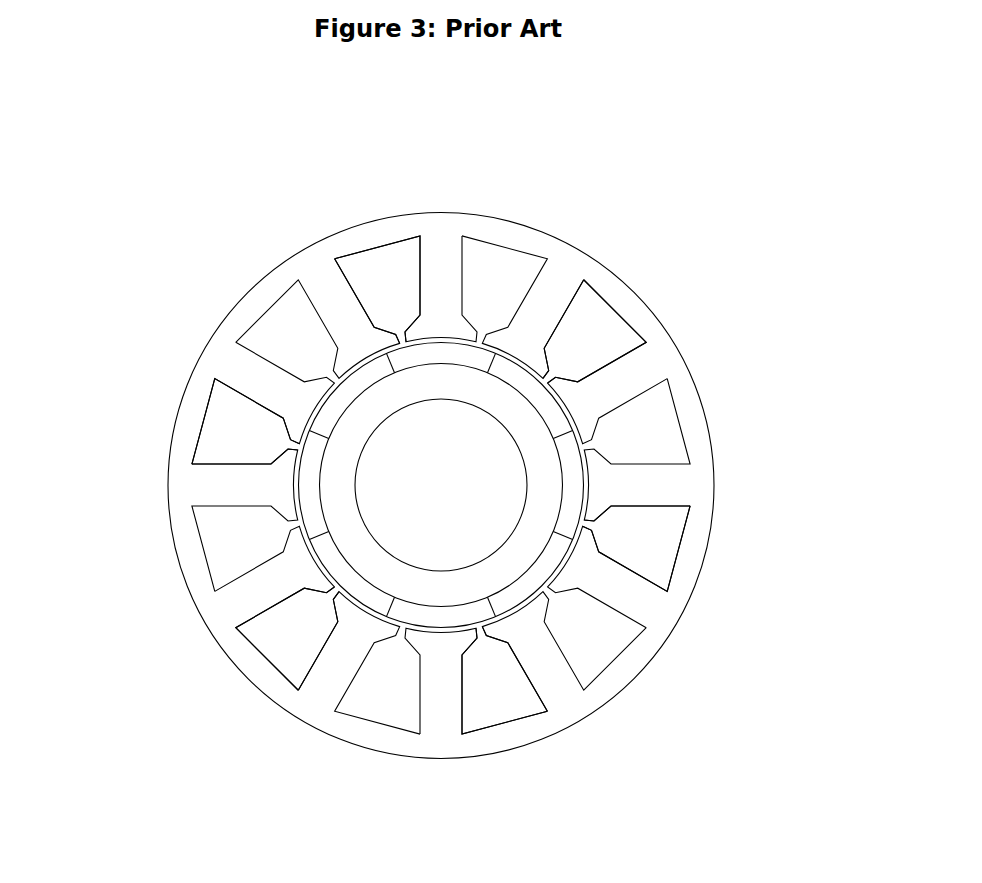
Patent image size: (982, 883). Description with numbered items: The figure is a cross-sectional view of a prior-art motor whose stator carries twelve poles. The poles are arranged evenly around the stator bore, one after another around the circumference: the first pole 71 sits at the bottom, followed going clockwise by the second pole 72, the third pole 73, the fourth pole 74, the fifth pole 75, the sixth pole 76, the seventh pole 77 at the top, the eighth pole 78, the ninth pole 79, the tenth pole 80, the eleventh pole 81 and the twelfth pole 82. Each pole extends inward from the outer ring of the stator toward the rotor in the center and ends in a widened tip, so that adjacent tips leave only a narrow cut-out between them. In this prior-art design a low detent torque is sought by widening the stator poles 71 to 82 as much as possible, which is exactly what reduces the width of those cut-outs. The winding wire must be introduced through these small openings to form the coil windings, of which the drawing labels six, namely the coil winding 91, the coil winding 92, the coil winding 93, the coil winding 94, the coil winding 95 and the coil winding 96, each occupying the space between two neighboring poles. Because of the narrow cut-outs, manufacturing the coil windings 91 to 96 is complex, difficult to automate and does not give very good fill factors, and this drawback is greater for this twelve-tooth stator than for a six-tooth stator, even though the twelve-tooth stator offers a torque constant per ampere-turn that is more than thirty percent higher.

The stator pole 71 is at (435, 657).
The stator pole 72 is at (360, 620).
The stator pole 73 is at (305, 560).
The stator pole 74 is at (285, 490).
The stator pole 75 is at (303, 397).
The stator pole 76 is at (358, 340).
The stator pole 77 is at (433, 322).
The stator pole 78 is at (527, 340).
The stator pole 79 is at (582, 395).
The stator pole 80 is at (600, 490).
The stator pole 81 is at (582, 562).
The stator pole 82 is at (528, 618).
The coil winding 91 is at (304, 638).
The coil winding 92 is at (230, 432).
The coil winding 93 is at (378, 287).
The coil winding 94 is at (582, 323).
The coil winding 95 is at (656, 525).
The coil winding 96 is at (508, 695).